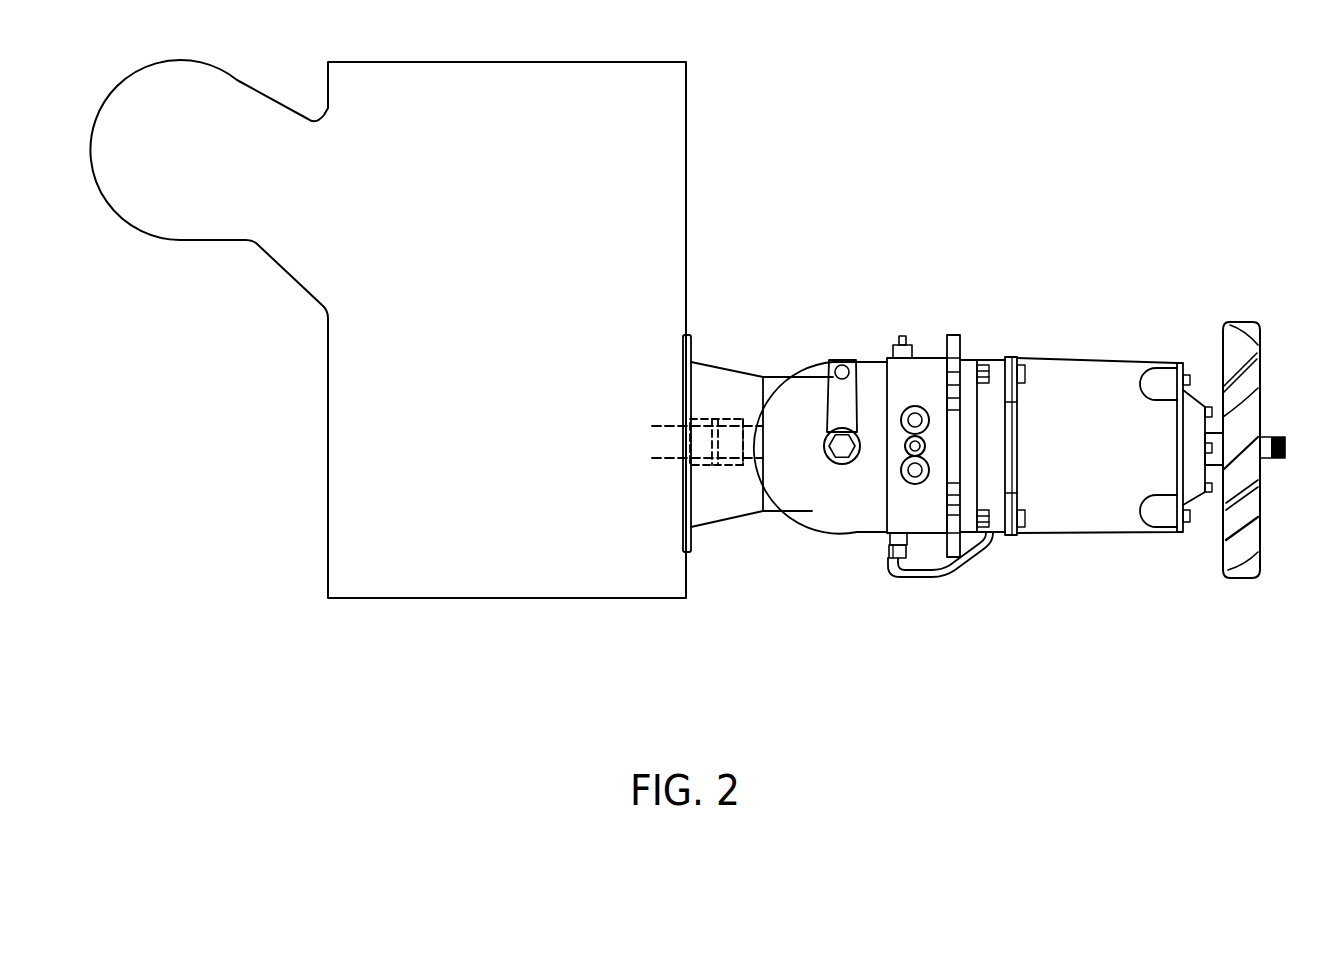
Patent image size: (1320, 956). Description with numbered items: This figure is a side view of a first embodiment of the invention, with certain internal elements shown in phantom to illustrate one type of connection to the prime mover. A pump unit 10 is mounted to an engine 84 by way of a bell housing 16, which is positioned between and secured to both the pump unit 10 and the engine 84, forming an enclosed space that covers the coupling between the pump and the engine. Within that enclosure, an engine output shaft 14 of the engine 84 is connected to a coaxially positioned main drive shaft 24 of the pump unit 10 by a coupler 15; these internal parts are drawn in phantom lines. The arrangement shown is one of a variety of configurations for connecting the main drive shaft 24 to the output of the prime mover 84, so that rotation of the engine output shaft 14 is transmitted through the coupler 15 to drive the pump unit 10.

The pump unit 10 is at (951, 396).
The engine output shaft 14 is at (667, 463).
The coupler 15 is at (715, 467).
The bell housing 16 is at (731, 364).
The main drive shaft 24 is at (752, 463).
The engine 84 is at (521, 291).